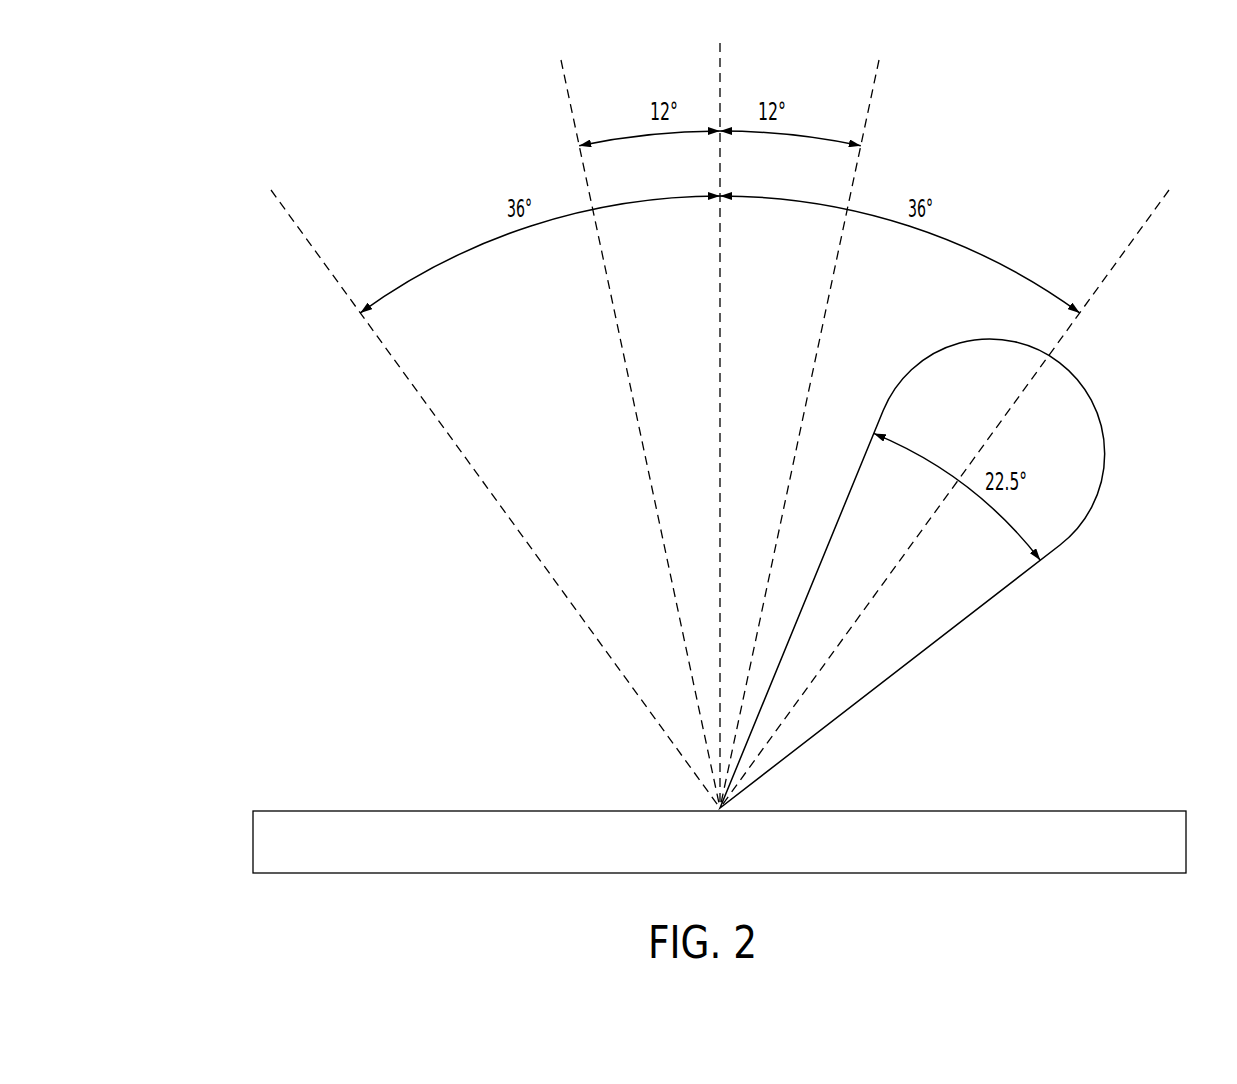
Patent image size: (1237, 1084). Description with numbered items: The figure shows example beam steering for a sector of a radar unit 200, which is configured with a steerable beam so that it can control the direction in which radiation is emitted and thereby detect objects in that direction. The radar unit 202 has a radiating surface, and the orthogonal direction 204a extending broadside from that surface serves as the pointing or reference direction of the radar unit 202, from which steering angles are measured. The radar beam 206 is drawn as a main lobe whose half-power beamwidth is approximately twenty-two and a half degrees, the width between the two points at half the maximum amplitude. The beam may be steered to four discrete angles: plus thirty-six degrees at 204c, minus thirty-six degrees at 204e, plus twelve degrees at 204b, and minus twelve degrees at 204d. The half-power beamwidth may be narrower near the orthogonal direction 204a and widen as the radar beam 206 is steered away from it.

The radar unit 200 is at (208, 117).
The radar unit 202 is at (398, 811).
The orthogonal direction 204a is at (716, 68).
The +12 degree steering direction 204b is at (876, 92).
The +36 degree steering direction 204c is at (1146, 228).
The -12 degree steering direction 204d is at (569, 108).
The -36 degree steering direction 204e is at (297, 232).
The radar beam 206 is at (1078, 392).